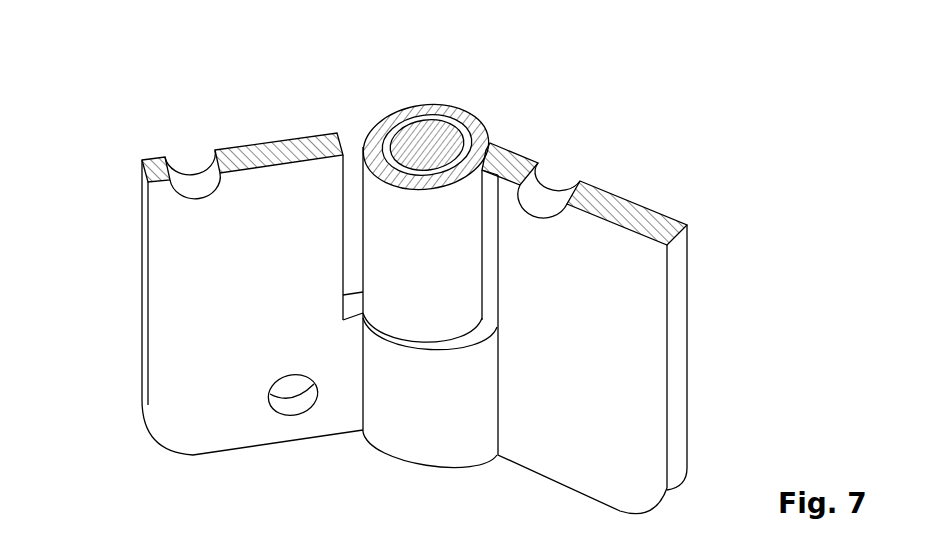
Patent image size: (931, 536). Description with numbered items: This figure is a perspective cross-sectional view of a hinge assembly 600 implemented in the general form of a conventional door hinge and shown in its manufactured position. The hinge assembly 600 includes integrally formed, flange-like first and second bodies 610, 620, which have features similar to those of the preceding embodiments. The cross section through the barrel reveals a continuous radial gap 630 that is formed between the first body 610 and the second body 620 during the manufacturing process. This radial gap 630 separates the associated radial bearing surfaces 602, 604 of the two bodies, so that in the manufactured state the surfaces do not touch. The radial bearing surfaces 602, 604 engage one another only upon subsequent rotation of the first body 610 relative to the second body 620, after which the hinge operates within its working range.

The hinge assembly 600 is at (106, 60).
The radial bearing surface 602 is at (433, 106).
The radial bearing surface 604 is at (452, 118).
The continuous radial gap 630 is at (472, 137).
The first body 610 is at (638, 263).
The second body 620 is at (207, 249).